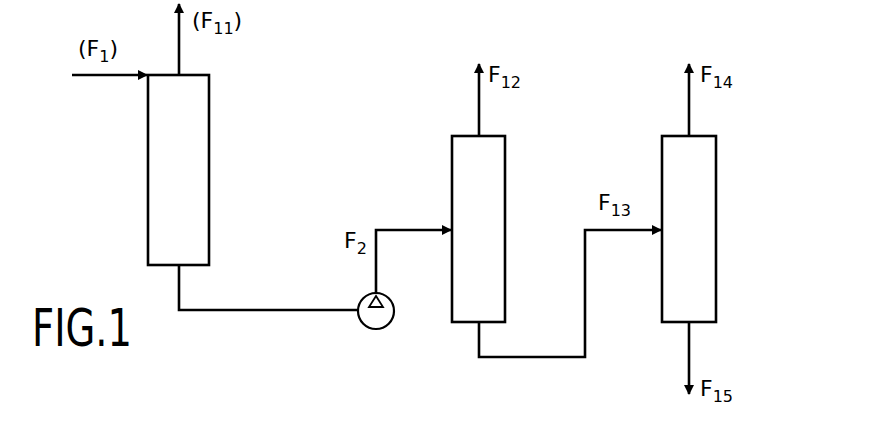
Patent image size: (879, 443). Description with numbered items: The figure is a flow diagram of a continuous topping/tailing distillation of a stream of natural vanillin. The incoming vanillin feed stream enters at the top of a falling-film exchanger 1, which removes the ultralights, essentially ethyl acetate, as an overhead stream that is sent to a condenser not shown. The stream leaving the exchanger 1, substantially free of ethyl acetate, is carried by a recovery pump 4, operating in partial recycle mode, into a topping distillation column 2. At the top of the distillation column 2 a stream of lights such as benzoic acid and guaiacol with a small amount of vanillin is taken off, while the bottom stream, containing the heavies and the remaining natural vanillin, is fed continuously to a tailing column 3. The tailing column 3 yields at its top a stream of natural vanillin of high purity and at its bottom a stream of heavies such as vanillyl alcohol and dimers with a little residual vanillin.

The falling-film exchanger 1 is at (168, 181).
The topping distillation column 2 is at (462, 157).
The tailing column 3 is at (705, 185).
The recovery pump 4 is at (386, 318).